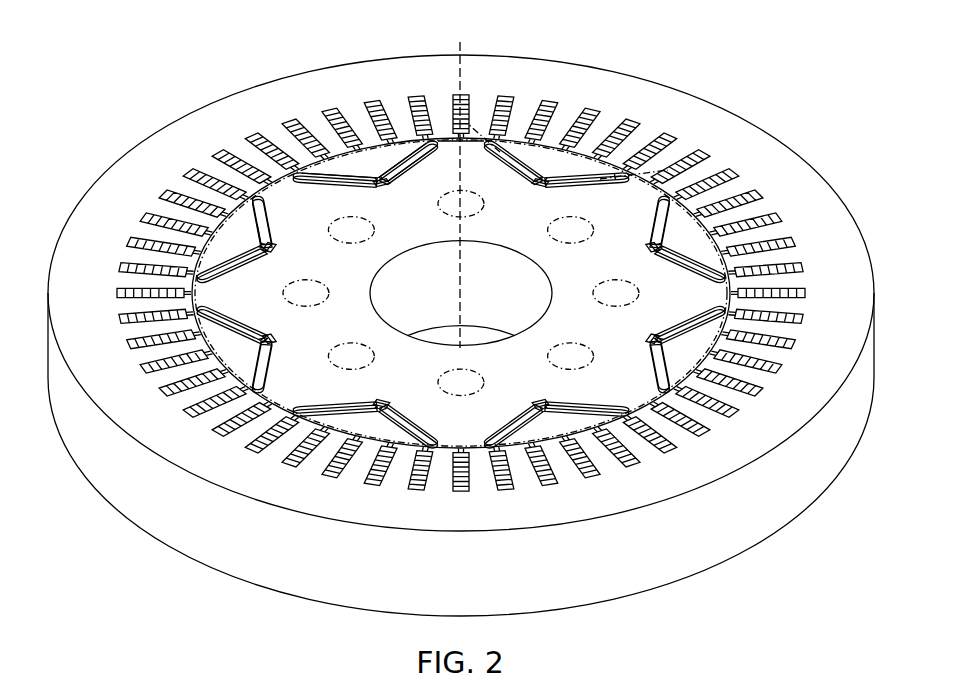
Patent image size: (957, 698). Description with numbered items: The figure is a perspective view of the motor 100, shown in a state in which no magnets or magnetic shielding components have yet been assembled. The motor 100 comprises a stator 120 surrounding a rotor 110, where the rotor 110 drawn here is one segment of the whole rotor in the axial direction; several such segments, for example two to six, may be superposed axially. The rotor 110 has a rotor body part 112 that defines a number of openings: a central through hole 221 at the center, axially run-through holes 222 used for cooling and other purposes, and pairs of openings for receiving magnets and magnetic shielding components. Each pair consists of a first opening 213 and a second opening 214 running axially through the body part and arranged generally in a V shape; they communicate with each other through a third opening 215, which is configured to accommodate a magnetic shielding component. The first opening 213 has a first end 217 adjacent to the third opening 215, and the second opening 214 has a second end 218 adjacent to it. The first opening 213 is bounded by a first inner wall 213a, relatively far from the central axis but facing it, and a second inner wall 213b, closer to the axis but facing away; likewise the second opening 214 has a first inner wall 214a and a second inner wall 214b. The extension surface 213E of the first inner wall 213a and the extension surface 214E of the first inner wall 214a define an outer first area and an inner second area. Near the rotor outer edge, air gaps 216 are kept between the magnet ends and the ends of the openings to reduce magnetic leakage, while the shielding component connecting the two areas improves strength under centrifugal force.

The motor 100 is at (800, 47).
The stator 120 is at (759, 130).
The rotor 110 is at (372, 295).
The rotor body part 112 is at (562, 278).
The central through hole 221 is at (482, 334).
The axially run-through hole 222 is at (571, 238).
The first opening 213 is at (505, 167).
The first inner wall of the first opening 213a is at (345, 168).
The second inner wall of the first opening 213b is at (283, 247).
The extension surface of the first inner wall 213E is at (481, 130).
The second opening 214 is at (405, 162).
The first inner wall of the second opening 214a is at (398, 150).
The second inner wall of the second opening 214b is at (408, 172).
The extension surface of the first inner wall of the second opening 214E is at (657, 168).
The third opening 215 is at (390, 187).
The air gap 216 is at (262, 180).
The first end 217 is at (476, 170).
The second end 218 is at (592, 188).